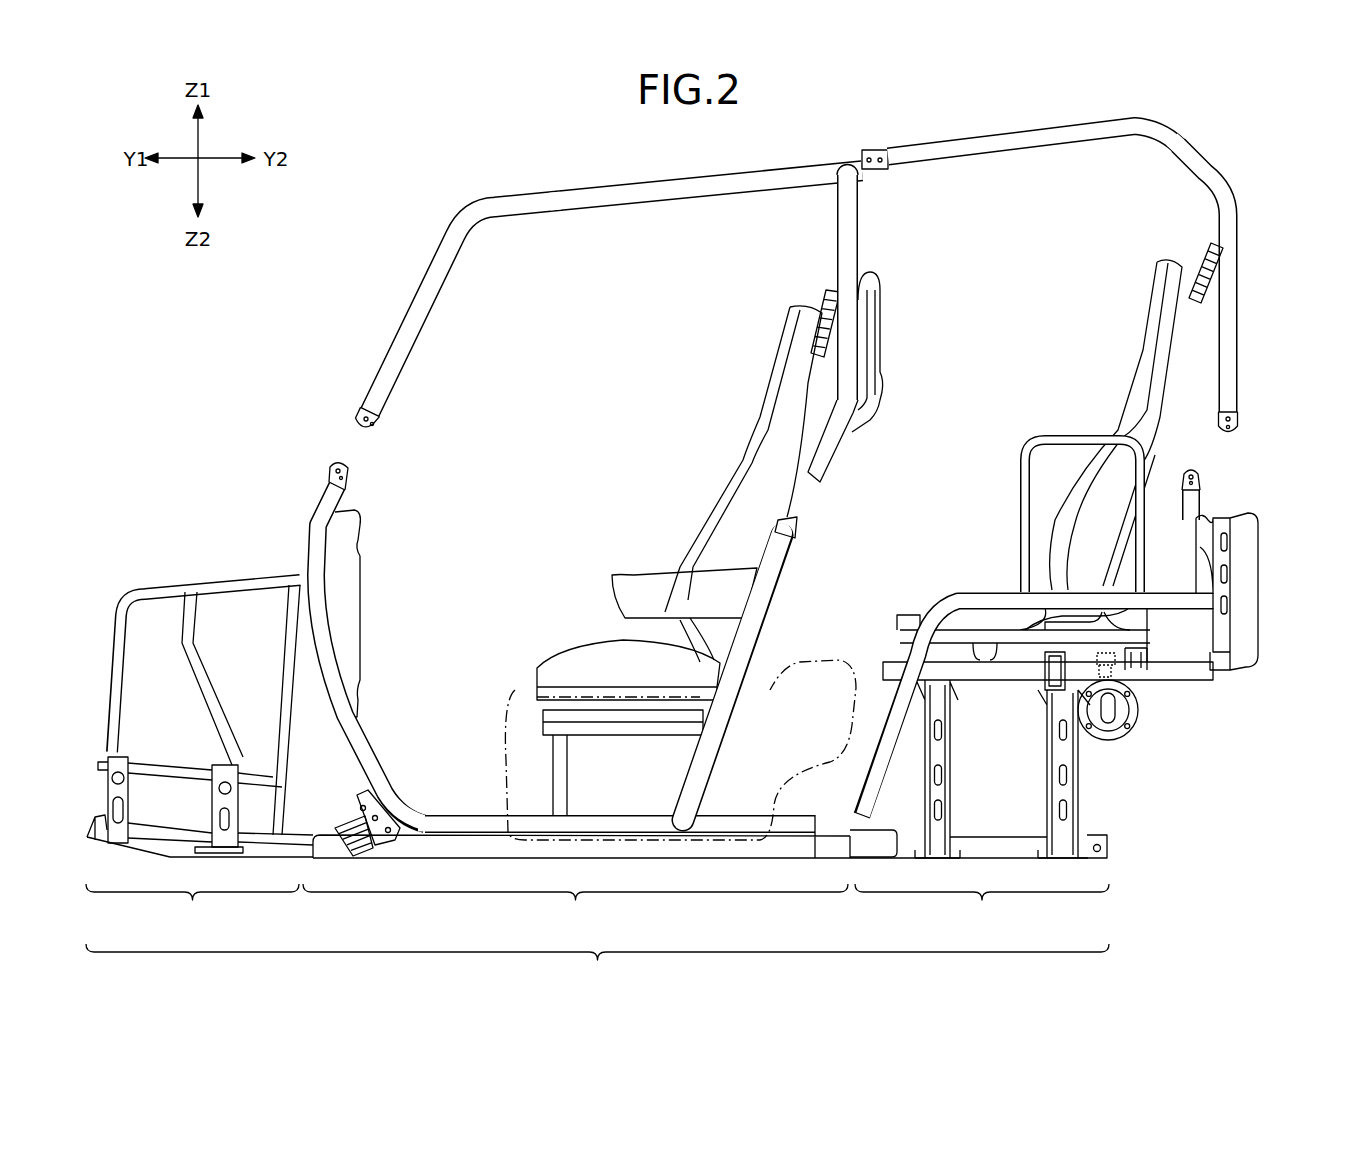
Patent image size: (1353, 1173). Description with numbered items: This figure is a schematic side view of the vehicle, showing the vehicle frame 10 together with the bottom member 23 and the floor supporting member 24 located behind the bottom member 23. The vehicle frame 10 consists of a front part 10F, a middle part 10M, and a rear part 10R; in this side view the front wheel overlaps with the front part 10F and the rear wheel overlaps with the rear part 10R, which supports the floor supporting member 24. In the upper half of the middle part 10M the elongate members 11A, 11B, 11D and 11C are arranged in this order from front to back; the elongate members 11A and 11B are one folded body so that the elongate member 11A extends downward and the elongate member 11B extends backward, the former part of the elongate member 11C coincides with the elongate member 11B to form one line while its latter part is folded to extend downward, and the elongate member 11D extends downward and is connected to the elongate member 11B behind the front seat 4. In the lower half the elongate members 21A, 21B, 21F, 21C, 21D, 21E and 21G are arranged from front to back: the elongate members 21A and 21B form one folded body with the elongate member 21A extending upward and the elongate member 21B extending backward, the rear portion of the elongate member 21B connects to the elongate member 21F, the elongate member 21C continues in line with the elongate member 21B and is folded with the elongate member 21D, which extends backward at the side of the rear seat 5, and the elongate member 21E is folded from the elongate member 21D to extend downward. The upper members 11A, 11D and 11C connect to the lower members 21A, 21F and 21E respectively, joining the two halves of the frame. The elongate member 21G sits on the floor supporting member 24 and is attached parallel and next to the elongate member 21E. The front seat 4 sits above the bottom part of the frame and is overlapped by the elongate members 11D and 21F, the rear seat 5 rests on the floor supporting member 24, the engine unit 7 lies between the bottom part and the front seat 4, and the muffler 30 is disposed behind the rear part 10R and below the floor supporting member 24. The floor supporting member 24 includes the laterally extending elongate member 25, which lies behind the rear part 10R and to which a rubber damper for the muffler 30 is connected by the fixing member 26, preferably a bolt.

The front seat 4 is at (747, 459).
The rear seat 5 is at (1133, 341).
The engine unit 7 is at (505, 725).
The vehicle frame 10 is at (597, 970).
The front part 10F is at (199, 757).
The middle part 10M is at (695, 850).
The rear part 10R is at (982, 793).
The elongate member 11A is at (422, 300).
The elongate member 11B is at (626, 192).
The elongate member 11C is at (1237, 246).
The elongate member 11D is at (858, 215).
The elongate member 21A is at (332, 635).
The elongate member 21B is at (450, 818).
The elongate member 21C is at (888, 715).
The elongate member 21D is at (1025, 588).
The elongate member 21E is at (1205, 502).
The elongate member 21F is at (750, 626).
The elongate member 21G is at (1232, 620).
The bottom member 23 is at (620, 835).
The floor supporting member 24 is at (990, 680).
The elongate member 25 is at (1150, 658).
The fixing member 26 is at (1112, 672).
The muffler 30 is at (1138, 718).